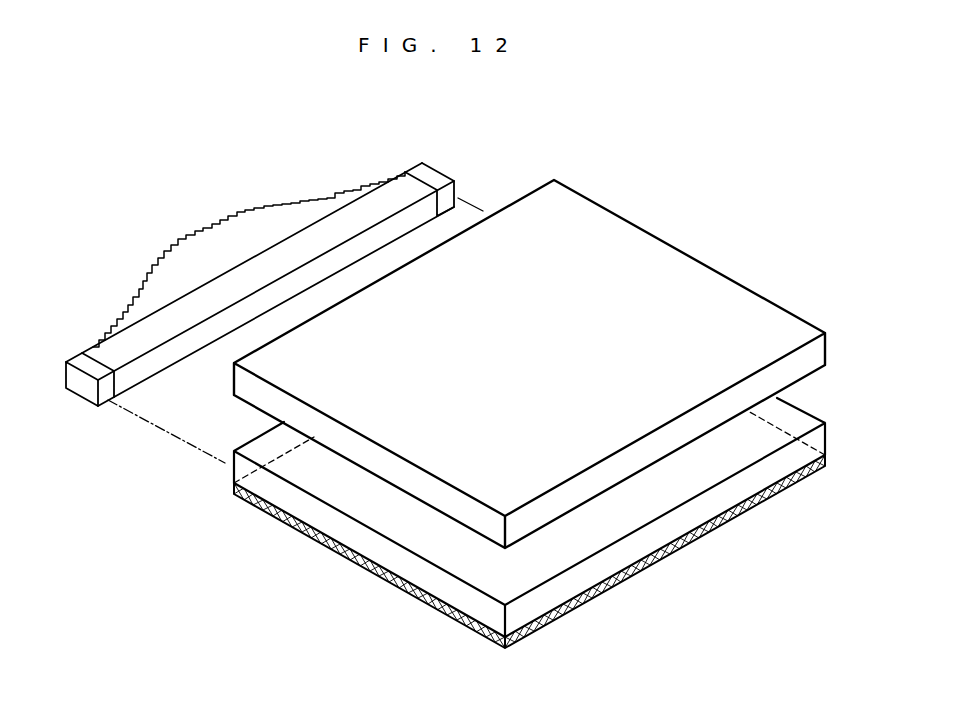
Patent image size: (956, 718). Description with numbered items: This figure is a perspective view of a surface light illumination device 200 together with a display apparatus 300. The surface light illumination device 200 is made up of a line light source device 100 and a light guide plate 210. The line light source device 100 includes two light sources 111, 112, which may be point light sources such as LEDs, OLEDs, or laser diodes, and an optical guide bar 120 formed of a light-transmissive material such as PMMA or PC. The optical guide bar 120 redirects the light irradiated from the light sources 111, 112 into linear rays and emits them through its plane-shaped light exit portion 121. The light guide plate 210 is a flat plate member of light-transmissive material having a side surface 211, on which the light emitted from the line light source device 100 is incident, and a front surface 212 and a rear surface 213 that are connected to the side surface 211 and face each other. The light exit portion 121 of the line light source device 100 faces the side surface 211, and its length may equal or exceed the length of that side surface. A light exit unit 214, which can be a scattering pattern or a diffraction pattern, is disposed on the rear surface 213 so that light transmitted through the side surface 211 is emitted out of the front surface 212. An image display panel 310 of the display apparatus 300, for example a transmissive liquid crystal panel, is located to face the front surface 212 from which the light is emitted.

The line light source device 100 is at (103, 437).
The light source 111 is at (80, 388).
The light source 112 is at (437, 178).
The optical guide bar 120 is at (129, 315).
The light exit portion 121 is at (165, 362).
The surface light illumination device 200 is at (140, 565).
The light guide plate 210 is at (215, 512).
The side surface 211 is at (242, 443).
The front surface 212 is at (488, 572).
The rear surface 213 is at (418, 579).
The light exit unit 214 is at (362, 562).
The display apparatus 300 is at (719, 154).
The image display panel 310 is at (724, 302).